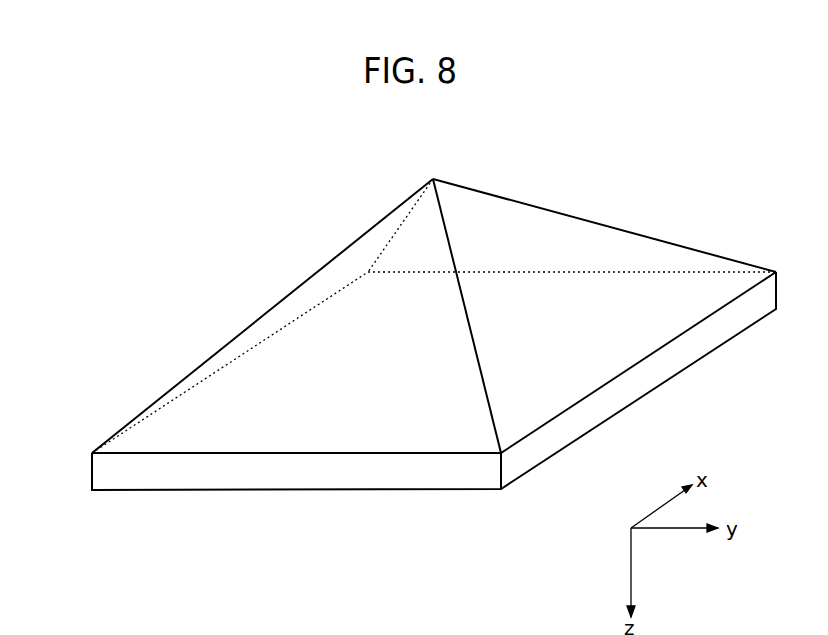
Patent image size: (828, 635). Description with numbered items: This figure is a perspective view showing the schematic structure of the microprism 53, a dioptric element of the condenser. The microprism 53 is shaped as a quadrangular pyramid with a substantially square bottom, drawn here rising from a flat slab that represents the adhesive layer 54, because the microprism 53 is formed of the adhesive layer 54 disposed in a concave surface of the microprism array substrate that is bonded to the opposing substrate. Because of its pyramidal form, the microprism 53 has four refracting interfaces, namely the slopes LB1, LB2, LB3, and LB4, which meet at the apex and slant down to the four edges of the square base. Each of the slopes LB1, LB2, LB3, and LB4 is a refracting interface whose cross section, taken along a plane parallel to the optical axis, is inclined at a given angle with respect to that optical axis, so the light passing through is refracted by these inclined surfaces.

The microprism 53 is at (262, 316).
The adhesive layer 54 is at (92, 475).
The slope LB1 is at (540, 228).
The slope LB2 is at (640, 253).
The slope LB3 is at (378, 415).
The slope LB4 is at (348, 272).